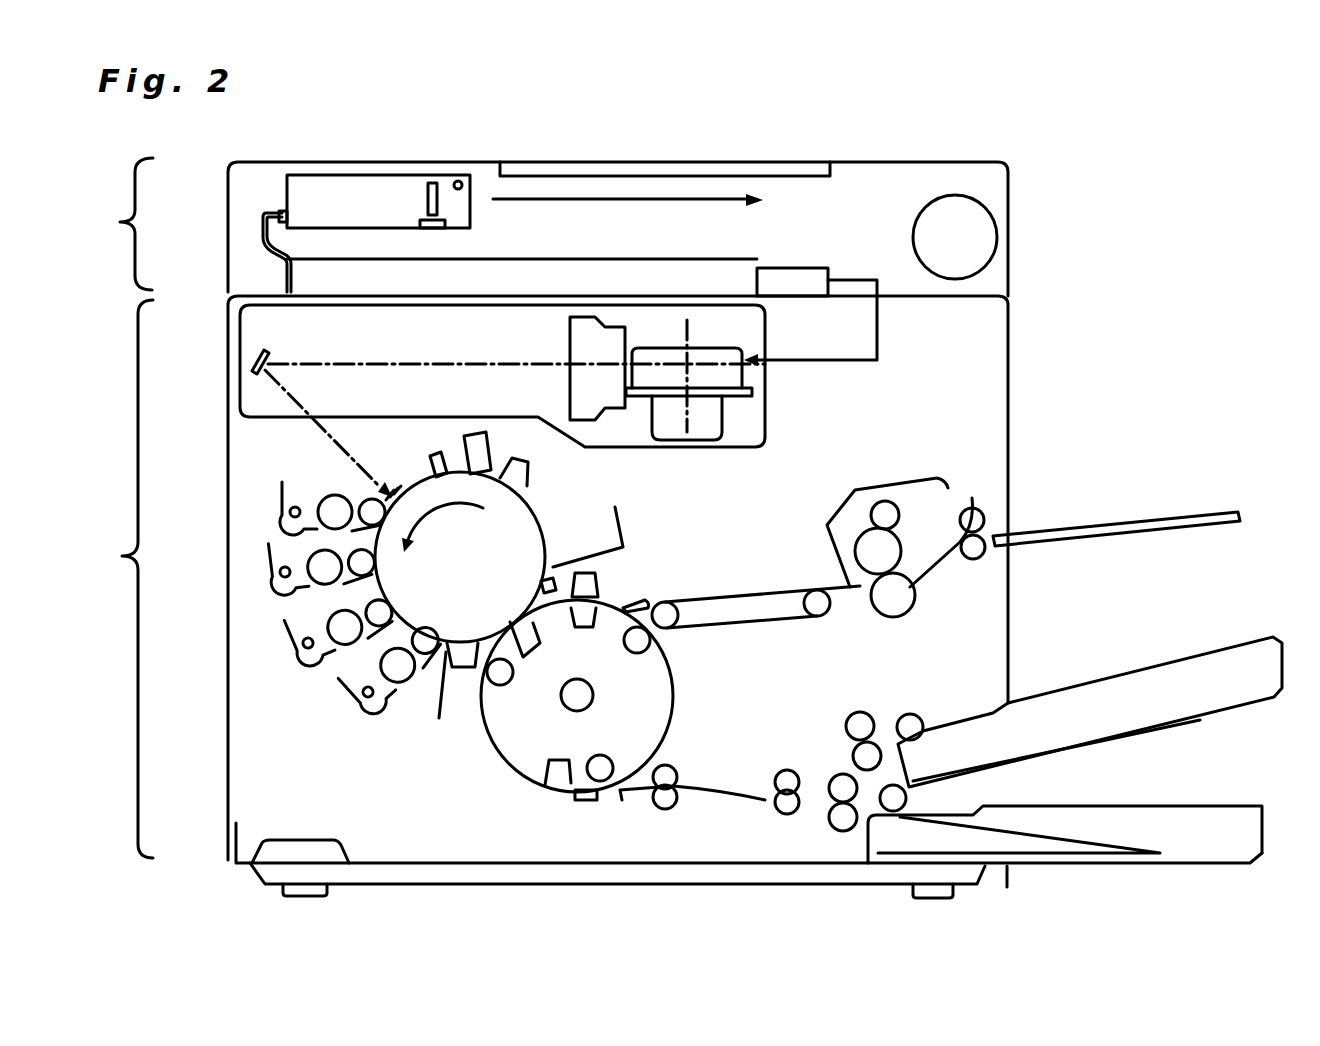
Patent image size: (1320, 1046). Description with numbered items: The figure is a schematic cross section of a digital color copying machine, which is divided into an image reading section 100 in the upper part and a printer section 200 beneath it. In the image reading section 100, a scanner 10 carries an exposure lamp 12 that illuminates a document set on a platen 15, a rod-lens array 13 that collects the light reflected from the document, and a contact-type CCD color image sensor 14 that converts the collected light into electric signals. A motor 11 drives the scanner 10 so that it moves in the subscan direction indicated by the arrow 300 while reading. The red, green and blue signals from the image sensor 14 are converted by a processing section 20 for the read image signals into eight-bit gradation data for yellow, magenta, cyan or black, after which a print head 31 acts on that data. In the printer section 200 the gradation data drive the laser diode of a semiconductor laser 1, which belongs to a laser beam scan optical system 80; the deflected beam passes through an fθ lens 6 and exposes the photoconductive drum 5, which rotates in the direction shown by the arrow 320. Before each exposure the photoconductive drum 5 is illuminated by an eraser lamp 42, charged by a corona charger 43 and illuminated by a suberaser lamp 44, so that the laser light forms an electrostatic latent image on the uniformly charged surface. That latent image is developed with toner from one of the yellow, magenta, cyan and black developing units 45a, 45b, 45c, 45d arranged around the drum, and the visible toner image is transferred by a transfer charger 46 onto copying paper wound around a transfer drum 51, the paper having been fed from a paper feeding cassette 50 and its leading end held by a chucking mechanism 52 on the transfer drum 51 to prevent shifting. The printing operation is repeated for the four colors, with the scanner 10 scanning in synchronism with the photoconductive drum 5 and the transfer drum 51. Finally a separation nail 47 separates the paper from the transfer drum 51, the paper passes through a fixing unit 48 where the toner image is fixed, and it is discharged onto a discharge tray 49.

The image reading section 100 is at (520, 227).
The printer section 200 is at (645, 597).
The scanner 10 is at (363, 164).
The exposure lamp 12 is at (460, 180).
The rod-lens array 13 is at (426, 203).
The CCD color image sensor 14 is at (432, 228).
The platen 15 is at (752, 164).
The arrow indicating subscan direction 300 is at (620, 196).
The processing section for the read image signals 20 is at (297, 270).
The motor 11 is at (1000, 219).
The print head 31 is at (805, 276).
The semiconductor laser 1 is at (700, 360).
The laser beam scan optical system 80 is at (733, 375).
The fθ lens 6 is at (612, 392).
The photoconductive drum 5 is at (478, 576).
The arrow indicating rotation direction 320 is at (408, 487).
The corona charger 43 is at (478, 433).
The suberaser lamp 44 is at (438, 450).
The eraser lamp 42 is at (528, 463).
The yellow developing unit 45a is at (282, 500).
The magenta developing unit 45b is at (272, 576).
The cyan developing unit 45c is at (290, 647).
The black developing unit 45d is at (348, 697).
The transfer drum 51 is at (507, 763).
The transfer charger 46 is at (533, 622).
The chucking mechanism 52 is at (584, 801).
The separation nail 47 is at (641, 602).
The fixing unit 48 is at (858, 488).
The discharge tray 49 is at (1185, 522).
The paper feeding cassette 50 is at (1207, 716).